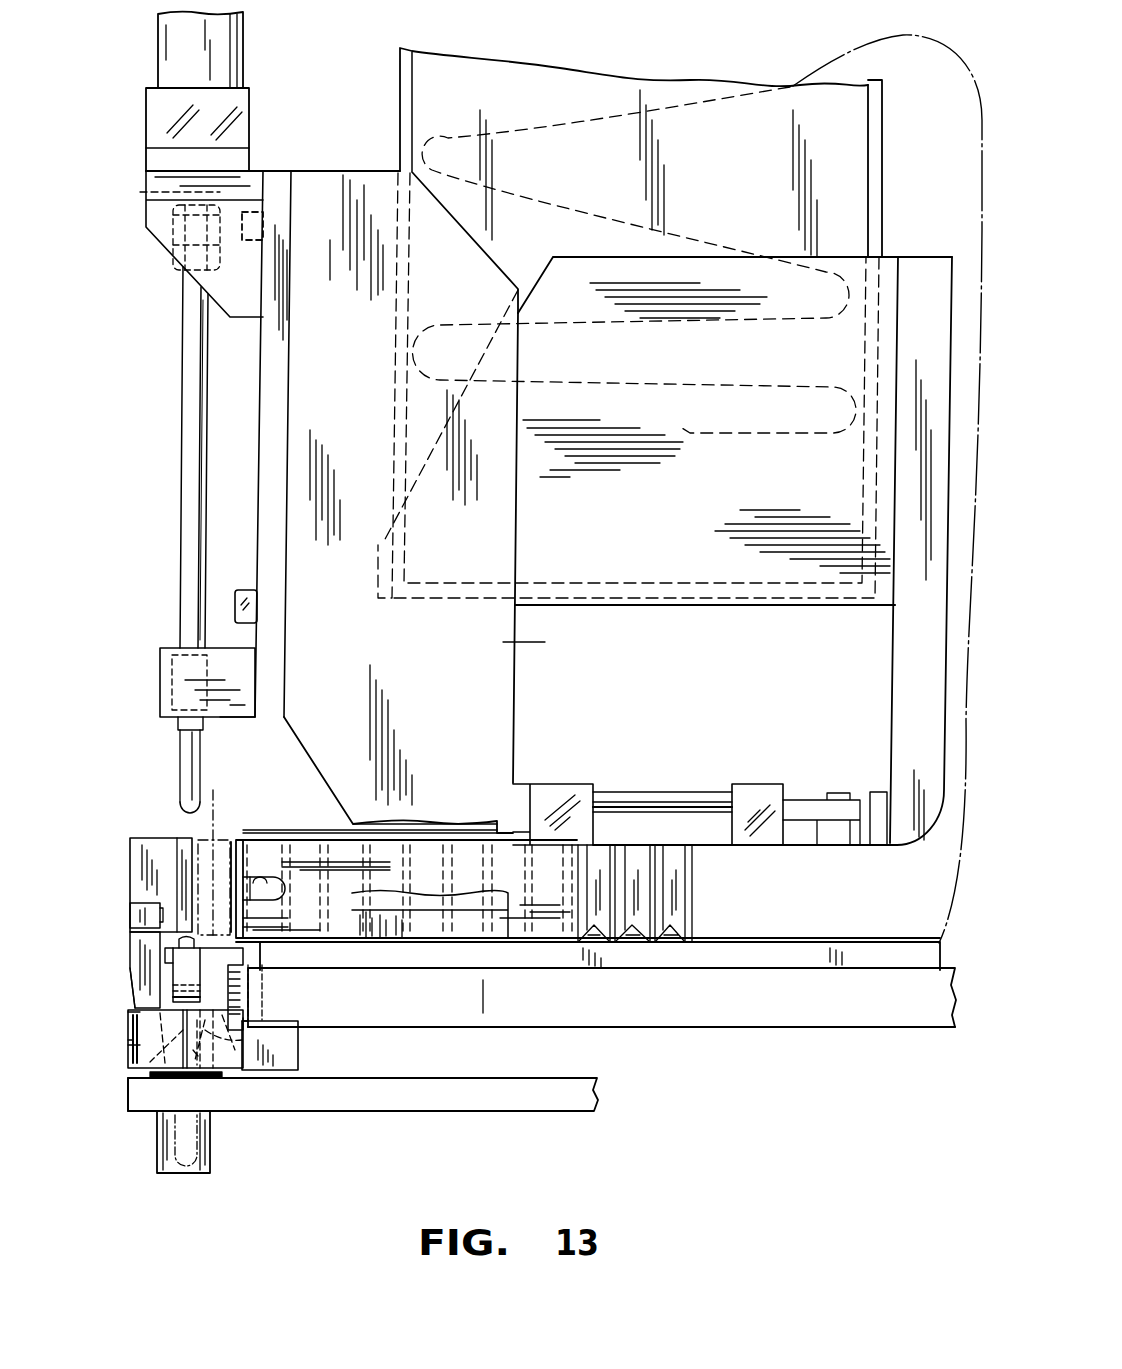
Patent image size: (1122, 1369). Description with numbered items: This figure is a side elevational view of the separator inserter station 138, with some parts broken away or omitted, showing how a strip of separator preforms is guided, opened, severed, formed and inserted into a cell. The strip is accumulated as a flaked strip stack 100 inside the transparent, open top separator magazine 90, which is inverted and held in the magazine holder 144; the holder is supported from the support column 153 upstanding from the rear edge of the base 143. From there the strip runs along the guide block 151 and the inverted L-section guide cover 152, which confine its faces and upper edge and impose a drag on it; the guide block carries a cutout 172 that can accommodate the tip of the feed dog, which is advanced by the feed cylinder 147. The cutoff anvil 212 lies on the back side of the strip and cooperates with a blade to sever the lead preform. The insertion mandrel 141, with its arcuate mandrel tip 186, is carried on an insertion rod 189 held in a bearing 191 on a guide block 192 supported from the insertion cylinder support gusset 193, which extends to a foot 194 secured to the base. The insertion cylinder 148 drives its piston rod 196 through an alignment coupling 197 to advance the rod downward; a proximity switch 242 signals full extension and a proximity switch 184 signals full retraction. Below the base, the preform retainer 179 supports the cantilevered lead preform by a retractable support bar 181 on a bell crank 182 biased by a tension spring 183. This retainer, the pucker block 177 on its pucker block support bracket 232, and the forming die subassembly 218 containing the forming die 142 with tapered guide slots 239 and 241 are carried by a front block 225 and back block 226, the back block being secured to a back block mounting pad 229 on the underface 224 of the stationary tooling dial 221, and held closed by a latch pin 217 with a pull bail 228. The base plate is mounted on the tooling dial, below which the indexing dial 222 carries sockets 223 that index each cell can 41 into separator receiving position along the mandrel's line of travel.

The insertion cylinder 148 is at (165, 44).
The separator magazine 90 is at (497, 57).
The flaked strip stack 100 is at (612, 118).
The insertion cylinder piston rod 196 is at (176, 185).
The alignment coupling 197 is at (176, 236).
The separator preform magazine holder 144 is at (573, 257).
The proximity switch 184 is at (262, 240).
The insertion rod 189 is at (182, 552).
The proximity switch 242 is at (248, 603).
The bearing 191 is at (168, 685).
The mandrel 141 is at (183, 752).
The guide block 192 is at (232, 705).
The mandrel tip 186 is at (182, 813).
The pucker block 177 is at (170, 838).
The cutoff anvil 212 is at (220, 815).
The cutout 172 is at (268, 877).
The guide cover 152 is at (318, 832).
The guide block 151 is at (428, 858).
The feed cylinder 147 is at (577, 784).
The insertion cylinder support gusset 193 is at (541, 548).
The support column 153 is at (900, 622).
The pucker block support bracket 232 is at (135, 913).
The support bar 181 is at (140, 940).
The bell crank 182 is at (180, 970).
The preform retainer 179 is at (127, 997).
The latch pin 217 is at (128, 1023).
The tension spring 183 is at (236, 1010).
The pull bail 228 is at (128, 1045).
The tapered guide slot 239 is at (170, 1042).
The forming die subassembly 218 is at (212, 1010).
The tapered guide slot 241 is at (240, 1043).
The back block mounting pad 229 is at (285, 1050).
The front block 225 is at (160, 1080).
The socket 223 is at (160, 1140).
The forming die 142 is at (210, 1065).
The back block 226 is at (195, 1052).
The cell can 41 is at (190, 1175).
The underface 224 is at (388, 1022).
The stationary tooling dial 221 is at (468, 1013).
The base 143 is at (762, 958).
The indexing dial 222 is at (548, 1106).
The inserter station 138 is at (678, 1069).
The foot 194 is at (503, 928).